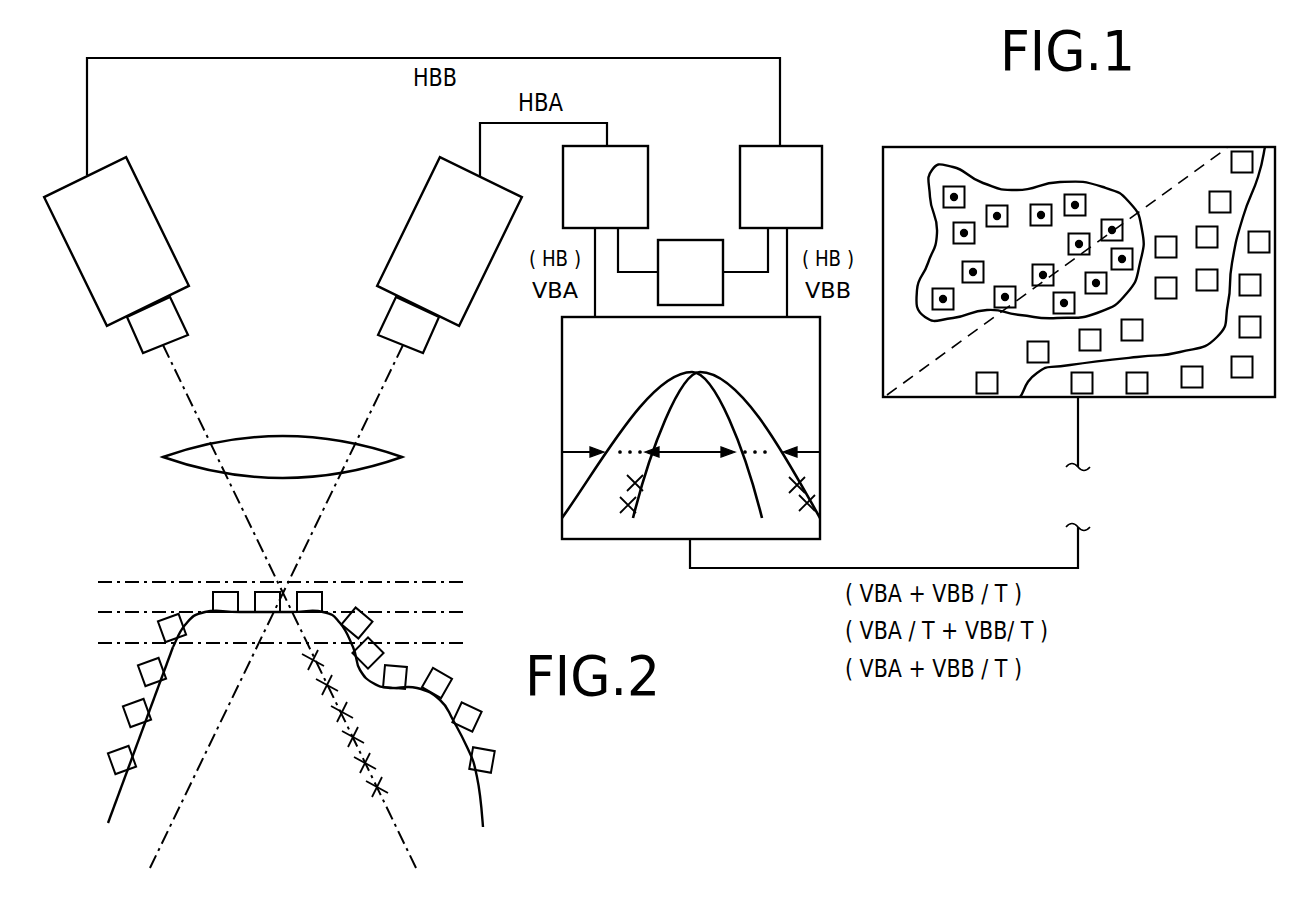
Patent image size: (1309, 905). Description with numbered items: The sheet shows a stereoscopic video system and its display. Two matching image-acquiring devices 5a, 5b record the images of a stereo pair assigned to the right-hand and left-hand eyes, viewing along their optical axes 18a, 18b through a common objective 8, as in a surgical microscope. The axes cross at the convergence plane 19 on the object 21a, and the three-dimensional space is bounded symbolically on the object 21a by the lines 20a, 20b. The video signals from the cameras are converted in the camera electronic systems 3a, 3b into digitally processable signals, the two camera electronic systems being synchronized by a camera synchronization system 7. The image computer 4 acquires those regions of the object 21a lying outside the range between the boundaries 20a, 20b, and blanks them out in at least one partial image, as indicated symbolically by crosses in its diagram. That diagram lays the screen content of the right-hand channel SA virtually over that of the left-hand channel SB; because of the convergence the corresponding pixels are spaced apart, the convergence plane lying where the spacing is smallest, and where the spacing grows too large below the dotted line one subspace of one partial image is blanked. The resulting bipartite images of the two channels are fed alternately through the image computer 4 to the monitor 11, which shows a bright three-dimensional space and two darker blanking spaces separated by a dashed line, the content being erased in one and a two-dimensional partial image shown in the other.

In FIG. 2, the camera electronic system 3a is at (605, 187).
In FIG. 2, the camera electronic system 3b is at (781, 187).
In FIG. 2, the image computer 4 is at (704, 428).
In FIG. 2, the image-acquiring device 5a is at (143, 238).
In FIG. 2, the image-acquiring device 5b is at (423, 230).
In FIG. 2, the camera synchronization system 7 is at (690, 272).
In FIG. 2, the common objective 8 is at (368, 465).
In FIG. 1, the monitor 11 is at (1108, 146).
In FIG. 2, the optical axis 18a is at (182, 380).
In FIG. 2, the optical axis 18b is at (380, 390).
In FIG. 2, the convergence plane 19 is at (122, 612).
In FIG. 2, the 3-D display boundary 20a is at (108, 643).
In FIG. 2, the 3-D display boundary 20b is at (135, 580).
In FIG. 2, the object 21a is at (288, 820).
In FIG. 2, the right-hand channel video signal SA is at (648, 400).
In FIG. 2, the left-hand channel video signal SB is at (740, 400).